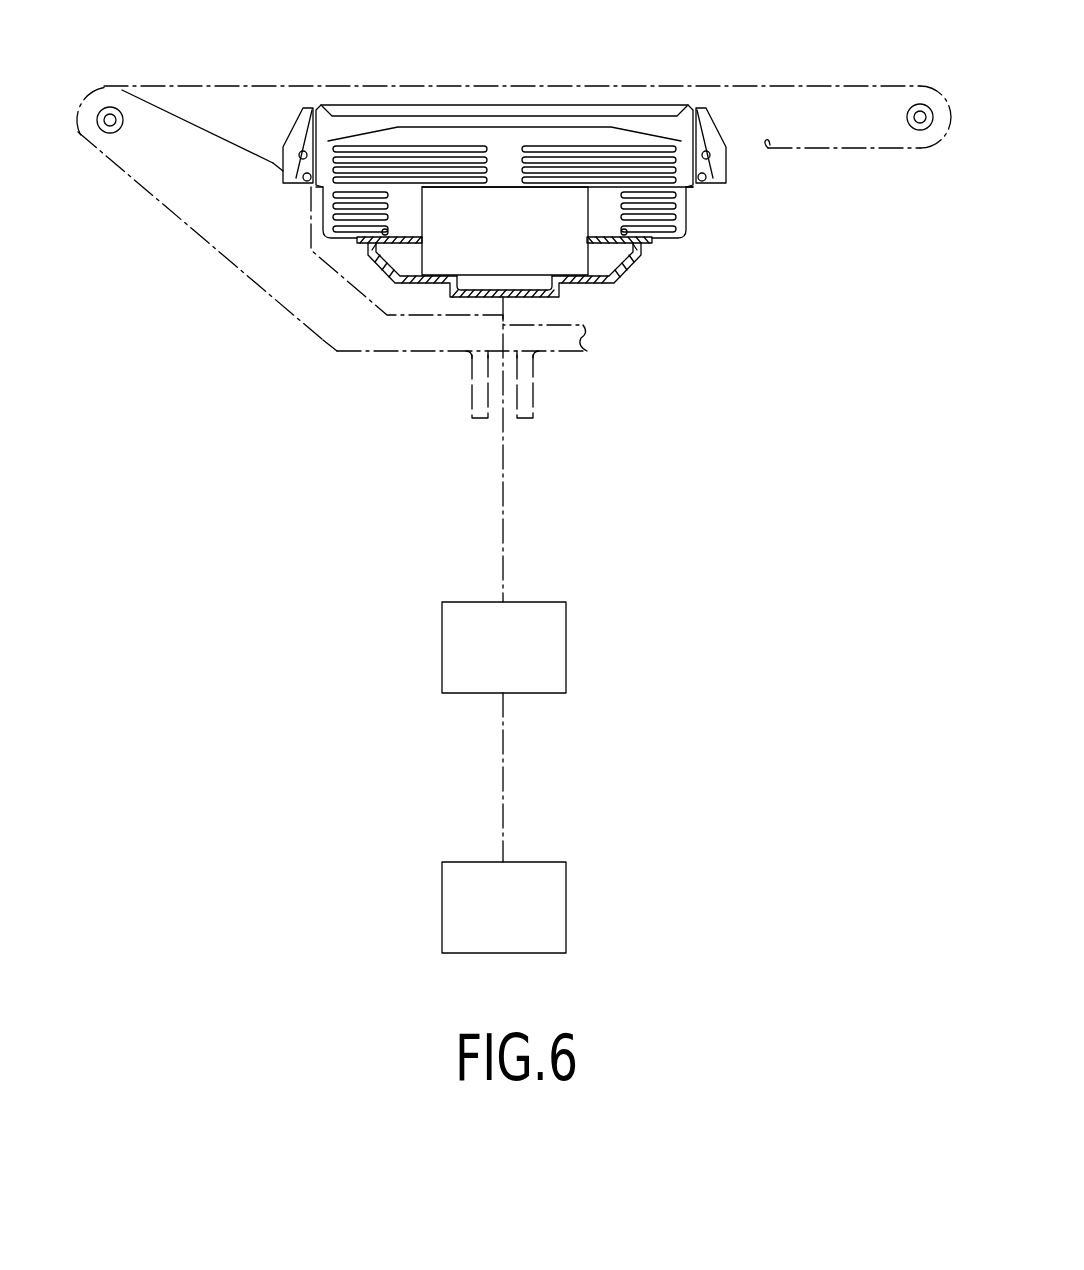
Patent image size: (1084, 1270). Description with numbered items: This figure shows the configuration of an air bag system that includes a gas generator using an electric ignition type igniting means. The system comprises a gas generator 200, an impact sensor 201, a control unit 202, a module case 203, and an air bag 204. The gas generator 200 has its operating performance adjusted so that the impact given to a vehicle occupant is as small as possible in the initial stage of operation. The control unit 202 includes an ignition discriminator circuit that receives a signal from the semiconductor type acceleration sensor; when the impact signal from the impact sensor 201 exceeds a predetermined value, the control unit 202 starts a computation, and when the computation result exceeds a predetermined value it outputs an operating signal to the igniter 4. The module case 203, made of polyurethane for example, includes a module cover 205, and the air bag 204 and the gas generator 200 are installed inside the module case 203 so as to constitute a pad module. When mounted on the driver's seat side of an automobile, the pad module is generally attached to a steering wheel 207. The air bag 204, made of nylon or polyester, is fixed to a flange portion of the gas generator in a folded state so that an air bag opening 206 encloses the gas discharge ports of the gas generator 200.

The igniter 4 is at (492, 297).
The gas generator 200 is at (420, 253).
The impact sensor 201 is at (441, 927).
The control unit 202 is at (441, 658).
The module case 203 is at (668, 100).
The air bag 204 is at (359, 137).
The module cover 205 is at (497, 105).
The air bag opening 206 is at (628, 233).
The steering wheel 207 is at (824, 84).